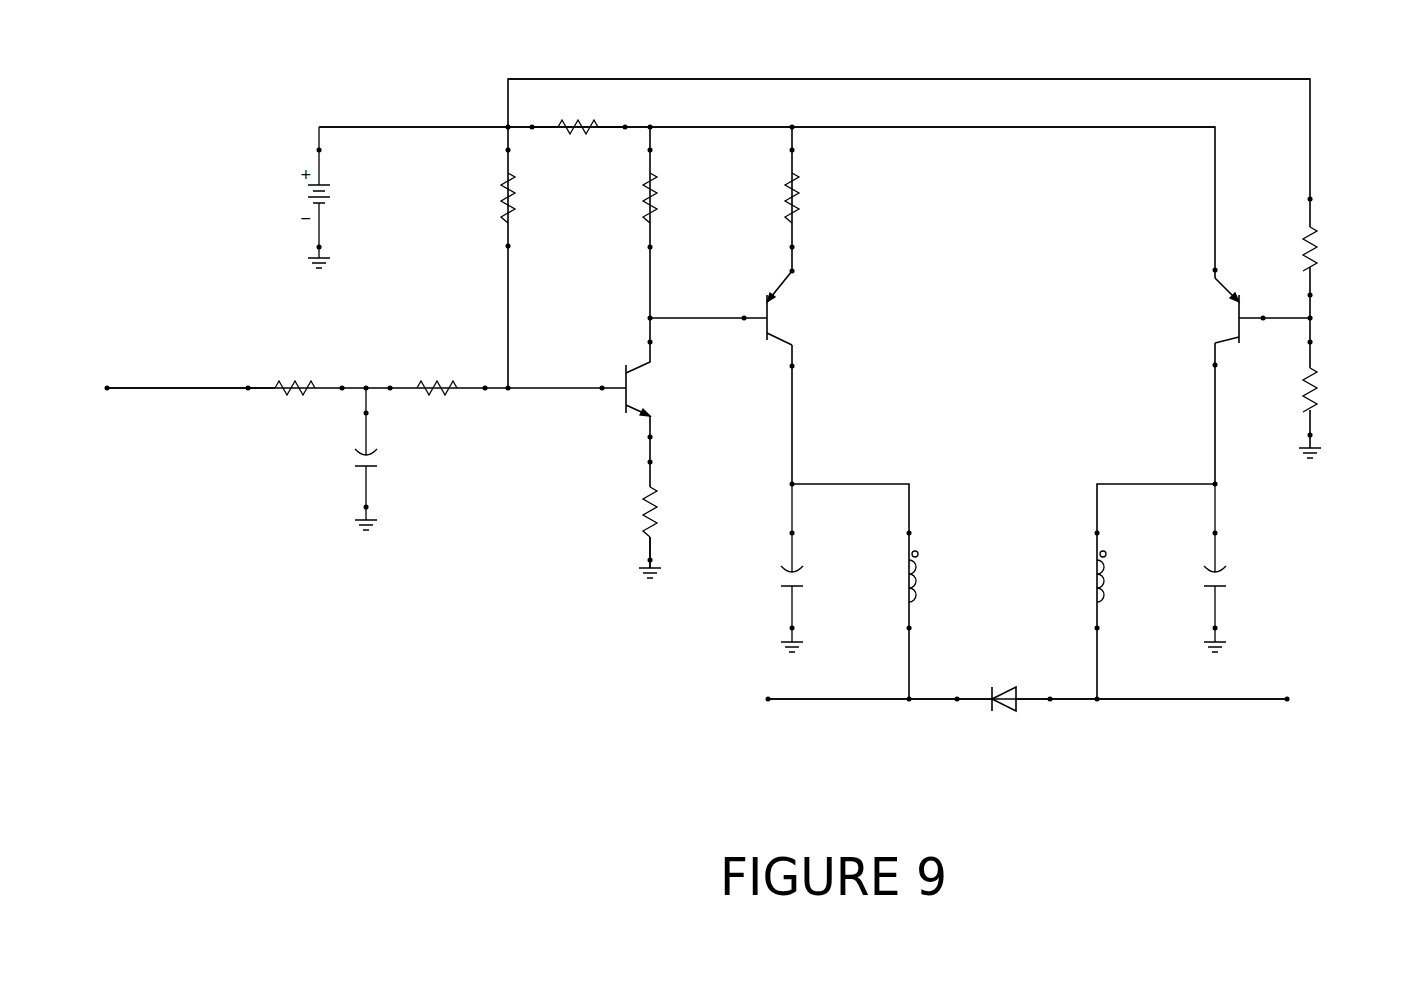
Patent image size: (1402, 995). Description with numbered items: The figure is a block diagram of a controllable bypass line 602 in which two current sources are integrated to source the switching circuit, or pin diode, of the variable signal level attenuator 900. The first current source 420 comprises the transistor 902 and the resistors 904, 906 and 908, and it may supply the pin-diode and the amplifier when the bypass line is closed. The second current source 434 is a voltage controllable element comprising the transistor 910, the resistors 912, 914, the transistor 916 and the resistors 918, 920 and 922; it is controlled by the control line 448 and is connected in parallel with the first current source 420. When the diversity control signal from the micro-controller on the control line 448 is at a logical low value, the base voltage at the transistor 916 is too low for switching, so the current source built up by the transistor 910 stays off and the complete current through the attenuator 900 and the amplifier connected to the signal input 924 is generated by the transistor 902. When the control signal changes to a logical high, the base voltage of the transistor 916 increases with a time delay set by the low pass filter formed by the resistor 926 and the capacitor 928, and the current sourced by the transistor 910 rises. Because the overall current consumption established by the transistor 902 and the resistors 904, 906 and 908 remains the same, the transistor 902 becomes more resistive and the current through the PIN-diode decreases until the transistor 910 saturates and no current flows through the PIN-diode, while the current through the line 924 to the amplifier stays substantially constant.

The first current source 420 is at (1256, 152).
The controllable bypass line 602 is at (1087, 150).
The resistor 904 is at (578, 108).
The resistor 920 is at (545, 198).
The resistor 914 is at (688, 198).
The resistor 912 is at (828, 198).
The resistor 906 is at (1313, 272).
The resistor 908 is at (1345, 390).
The transistor 910 is at (816, 308).
The transistor 902 is at (1193, 309).
The transistor 916 is at (660, 390).
The resistor 918 is at (685, 512).
The resistor 926 is at (292, 369).
The resistor 922 is at (442, 369).
The capacitor 928 is at (401, 454).
The control line 448 is at (172, 412).
The second current source 434 is at (681, 601).
The signal input 924 is at (815, 718).
The variable signal level attenuator 900 is at (1007, 705).